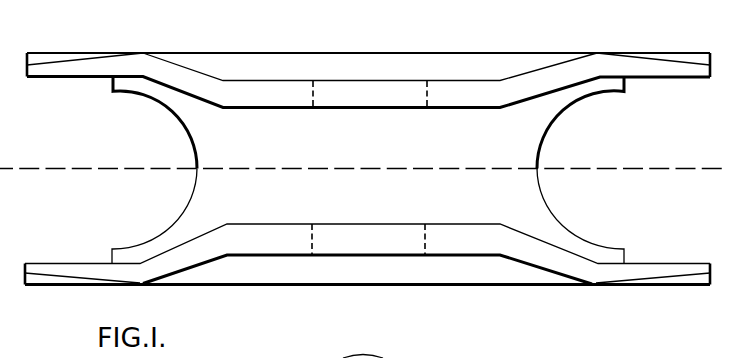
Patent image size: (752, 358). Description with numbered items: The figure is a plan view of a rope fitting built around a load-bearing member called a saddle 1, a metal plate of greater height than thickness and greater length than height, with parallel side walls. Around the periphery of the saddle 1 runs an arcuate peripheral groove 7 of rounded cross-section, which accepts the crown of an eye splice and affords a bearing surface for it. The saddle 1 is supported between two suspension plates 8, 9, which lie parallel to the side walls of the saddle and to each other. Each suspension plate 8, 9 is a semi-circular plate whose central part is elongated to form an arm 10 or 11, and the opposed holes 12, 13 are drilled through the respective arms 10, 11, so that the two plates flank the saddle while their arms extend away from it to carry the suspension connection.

The saddle 1 is at (339, 157).
The arcuate peripheral groove 7 is at (177, 217).
The suspension plate 8 is at (272, 273).
The suspension plate 9 is at (245, 70).
The arm 10 is at (453, 243).
The arm 11 is at (467, 95).
The hole 12 is at (368, 252).
The hole 13 is at (392, 93).